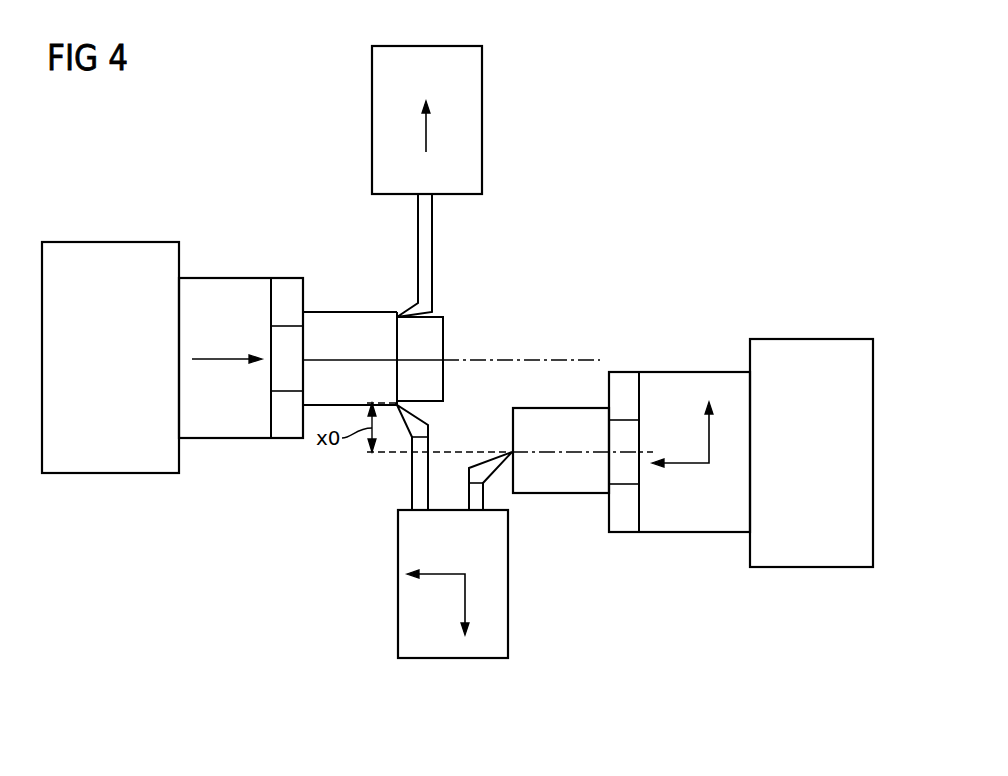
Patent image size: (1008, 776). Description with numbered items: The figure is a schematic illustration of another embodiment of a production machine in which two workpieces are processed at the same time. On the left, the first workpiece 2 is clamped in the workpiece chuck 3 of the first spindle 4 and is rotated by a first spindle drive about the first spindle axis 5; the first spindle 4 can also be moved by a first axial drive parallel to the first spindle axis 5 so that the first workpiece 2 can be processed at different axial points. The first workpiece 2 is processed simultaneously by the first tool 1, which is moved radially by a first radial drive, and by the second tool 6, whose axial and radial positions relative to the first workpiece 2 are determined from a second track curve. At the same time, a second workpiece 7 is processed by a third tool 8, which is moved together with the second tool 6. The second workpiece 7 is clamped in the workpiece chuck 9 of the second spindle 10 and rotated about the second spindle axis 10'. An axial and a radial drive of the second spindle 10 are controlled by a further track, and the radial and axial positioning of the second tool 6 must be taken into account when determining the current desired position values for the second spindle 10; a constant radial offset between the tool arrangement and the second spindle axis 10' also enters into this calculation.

The first tool 1 is at (400, 313).
The first workpiece 2 is at (443, 338).
The workpiece chuck 3 is at (287, 278).
The first spindle 4 is at (111, 241).
The first spindle axis 5 is at (522, 359).
The second tool 6 is at (420, 411).
The second workpiece 7 is at (558, 494).
The third tool 8 is at (484, 455).
The workpiece chuck 9 is at (686, 372).
The second spindle 10 is at (811, 422).
The second spindle axis 10' is at (582, 412).